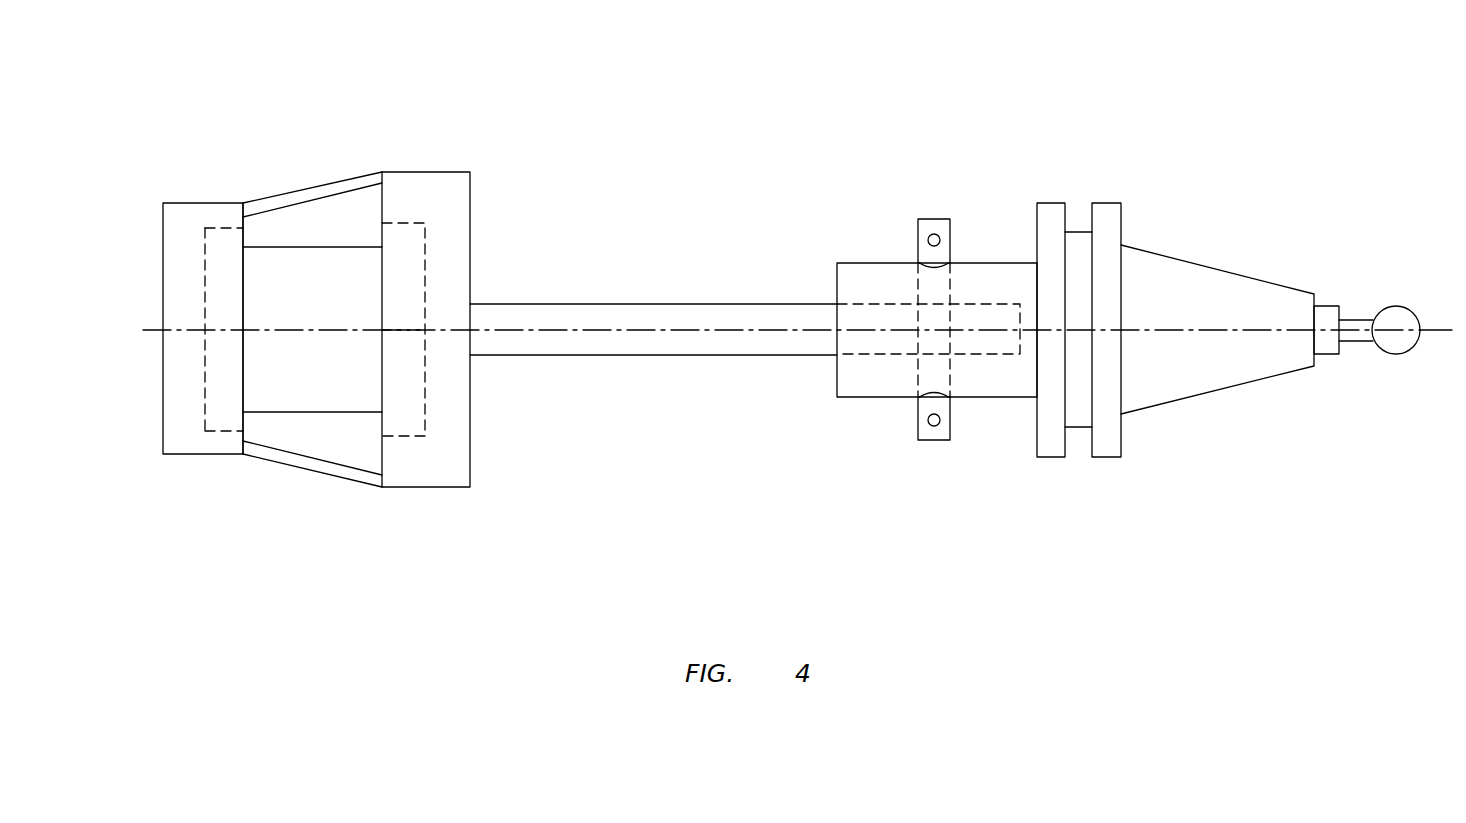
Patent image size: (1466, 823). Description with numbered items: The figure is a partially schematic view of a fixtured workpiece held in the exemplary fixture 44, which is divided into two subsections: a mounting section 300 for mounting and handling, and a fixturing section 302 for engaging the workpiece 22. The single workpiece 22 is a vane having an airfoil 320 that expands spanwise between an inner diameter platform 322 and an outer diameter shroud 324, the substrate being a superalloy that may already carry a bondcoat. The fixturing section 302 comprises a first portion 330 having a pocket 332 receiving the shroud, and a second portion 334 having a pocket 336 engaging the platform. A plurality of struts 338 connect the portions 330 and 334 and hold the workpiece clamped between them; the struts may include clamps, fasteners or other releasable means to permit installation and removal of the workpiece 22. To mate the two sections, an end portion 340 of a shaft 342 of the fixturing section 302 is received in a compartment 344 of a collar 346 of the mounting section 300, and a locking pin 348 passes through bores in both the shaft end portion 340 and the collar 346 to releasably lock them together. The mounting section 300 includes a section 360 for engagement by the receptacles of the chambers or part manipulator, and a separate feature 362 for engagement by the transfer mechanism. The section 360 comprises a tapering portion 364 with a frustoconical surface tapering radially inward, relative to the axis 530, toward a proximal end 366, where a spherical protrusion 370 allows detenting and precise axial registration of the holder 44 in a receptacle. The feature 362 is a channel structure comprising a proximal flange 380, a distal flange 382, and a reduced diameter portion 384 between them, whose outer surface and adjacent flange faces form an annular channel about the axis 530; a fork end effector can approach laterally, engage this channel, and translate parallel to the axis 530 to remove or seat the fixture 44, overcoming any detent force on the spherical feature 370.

The fixture 44 is at (682, 120).
The workpiece 22 is at (328, 427).
The mounting section 300 is at (1227, 220).
The fixturing section 302 is at (493, 167).
The airfoil 320 is at (329, 272).
The inner diameter platform 322 is at (222, 250).
The outer diameter shroud 324 is at (407, 275).
The first portion 330 is at (438, 467).
The pocket 332 is at (413, 397).
The second portion 334 is at (185, 440).
The pocket 336 is at (208, 320).
The struts 338 is at (283, 198).
The end portion of shaft 340 is at (862, 318).
The shaft 342 is at (743, 343).
The compartment 344 is at (967, 313).
The collar 346 is at (992, 385).
The locking pin 348 is at (933, 455).
The receptacle engagement section 360 is at (1328, 417).
The transfer engagement feature 362 is at (1077, 167).
The tapering portion 364 is at (1261, 303).
The proximal end 366 is at (1418, 307).
The spherical protrusion 370 is at (1398, 348).
The proximal flange 380 is at (1108, 453).
The distal flange 382 is at (1050, 453).
The reduced diameter portion 384 is at (1077, 217).
The axis 530 is at (1435, 337).